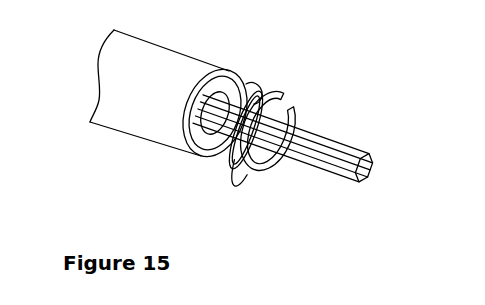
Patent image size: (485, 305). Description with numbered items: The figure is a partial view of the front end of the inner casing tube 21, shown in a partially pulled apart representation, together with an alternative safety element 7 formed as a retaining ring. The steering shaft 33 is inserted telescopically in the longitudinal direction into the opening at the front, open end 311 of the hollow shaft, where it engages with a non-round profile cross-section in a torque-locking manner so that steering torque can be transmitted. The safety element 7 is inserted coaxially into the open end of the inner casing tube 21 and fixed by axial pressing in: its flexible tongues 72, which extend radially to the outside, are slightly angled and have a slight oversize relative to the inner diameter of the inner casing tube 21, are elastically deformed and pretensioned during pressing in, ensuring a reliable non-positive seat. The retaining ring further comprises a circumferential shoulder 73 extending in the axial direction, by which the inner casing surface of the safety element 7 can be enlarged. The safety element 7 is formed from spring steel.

The inner casing tube 21 is at (135, 113).
The open end 311 is at (257, 91).
The flexible tongues 72 is at (297, 99).
The safety element 7 is at (253, 175).
The shoulder 73 is at (262, 172).
The steering shaft 33 is at (300, 165).